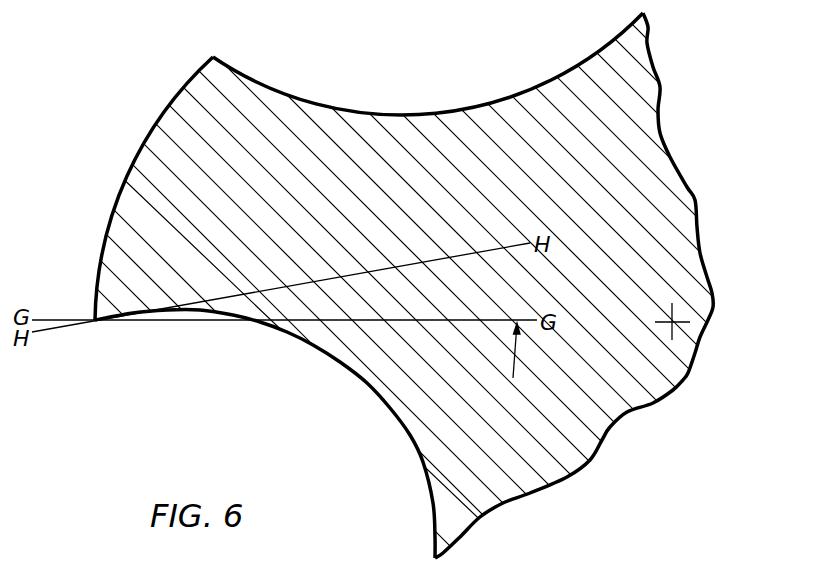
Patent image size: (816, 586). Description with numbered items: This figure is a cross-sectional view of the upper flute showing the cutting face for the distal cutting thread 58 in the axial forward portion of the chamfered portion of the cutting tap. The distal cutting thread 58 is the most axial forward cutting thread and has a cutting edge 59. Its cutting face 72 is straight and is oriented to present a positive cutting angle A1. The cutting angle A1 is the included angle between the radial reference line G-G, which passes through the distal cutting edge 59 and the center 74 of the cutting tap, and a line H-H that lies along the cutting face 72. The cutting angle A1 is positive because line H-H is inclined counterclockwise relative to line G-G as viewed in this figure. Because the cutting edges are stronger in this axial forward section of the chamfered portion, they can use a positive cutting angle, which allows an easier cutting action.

The distal cutting thread 58 is at (218, 72).
The cutting edge 59 is at (95, 322).
The cutting face 72 is at (133, 316).
The center 74 is at (672, 322).
The cutting angle A1 is at (510, 243).